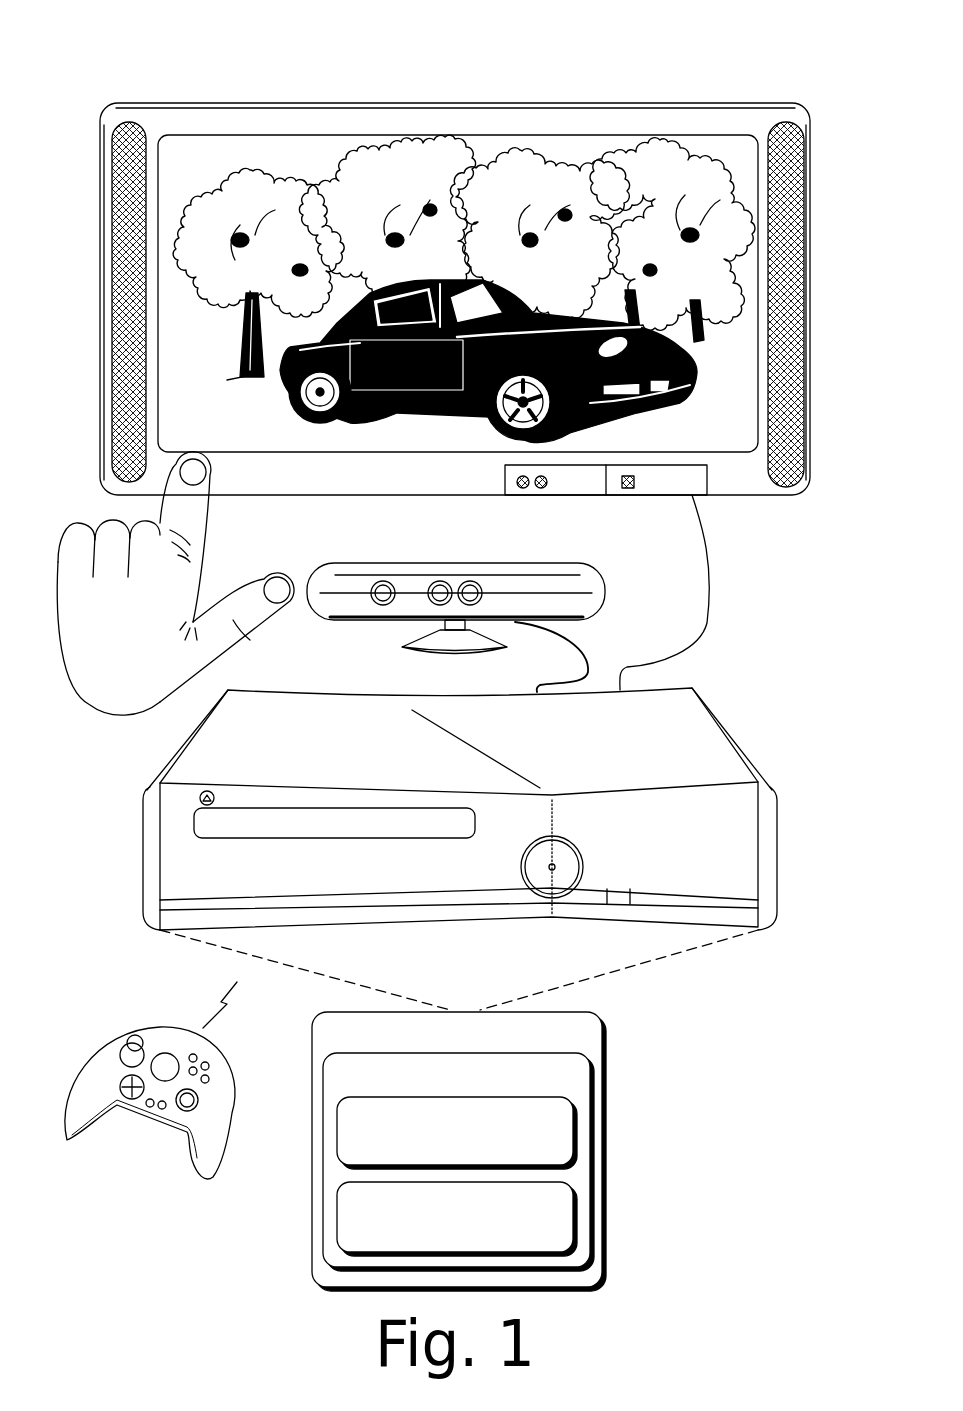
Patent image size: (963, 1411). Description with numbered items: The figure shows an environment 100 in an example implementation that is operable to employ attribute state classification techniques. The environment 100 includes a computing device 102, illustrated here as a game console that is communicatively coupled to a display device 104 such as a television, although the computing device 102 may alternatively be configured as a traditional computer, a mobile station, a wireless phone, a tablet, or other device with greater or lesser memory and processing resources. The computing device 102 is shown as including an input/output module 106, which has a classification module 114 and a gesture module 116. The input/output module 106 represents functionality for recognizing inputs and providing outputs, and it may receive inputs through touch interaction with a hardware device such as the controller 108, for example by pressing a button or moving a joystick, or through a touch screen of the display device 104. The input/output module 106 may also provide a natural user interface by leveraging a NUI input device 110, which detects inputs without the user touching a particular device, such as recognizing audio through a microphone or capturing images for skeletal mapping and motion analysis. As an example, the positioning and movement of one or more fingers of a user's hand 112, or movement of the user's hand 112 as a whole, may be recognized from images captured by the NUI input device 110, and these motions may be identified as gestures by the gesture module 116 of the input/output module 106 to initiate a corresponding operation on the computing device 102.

The environment 100 is at (142, 62).
The computing device 102 is at (570, 1044).
The display device 104 is at (206, 166).
The input/output module 106 is at (579, 1087).
The controller 108 is at (140, 1023).
The NUI input device 110 is at (455, 563).
The user's hand 112 is at (140, 674).
The classification module 114 is at (513, 1154).
The gesture module 116 is at (513, 1241).